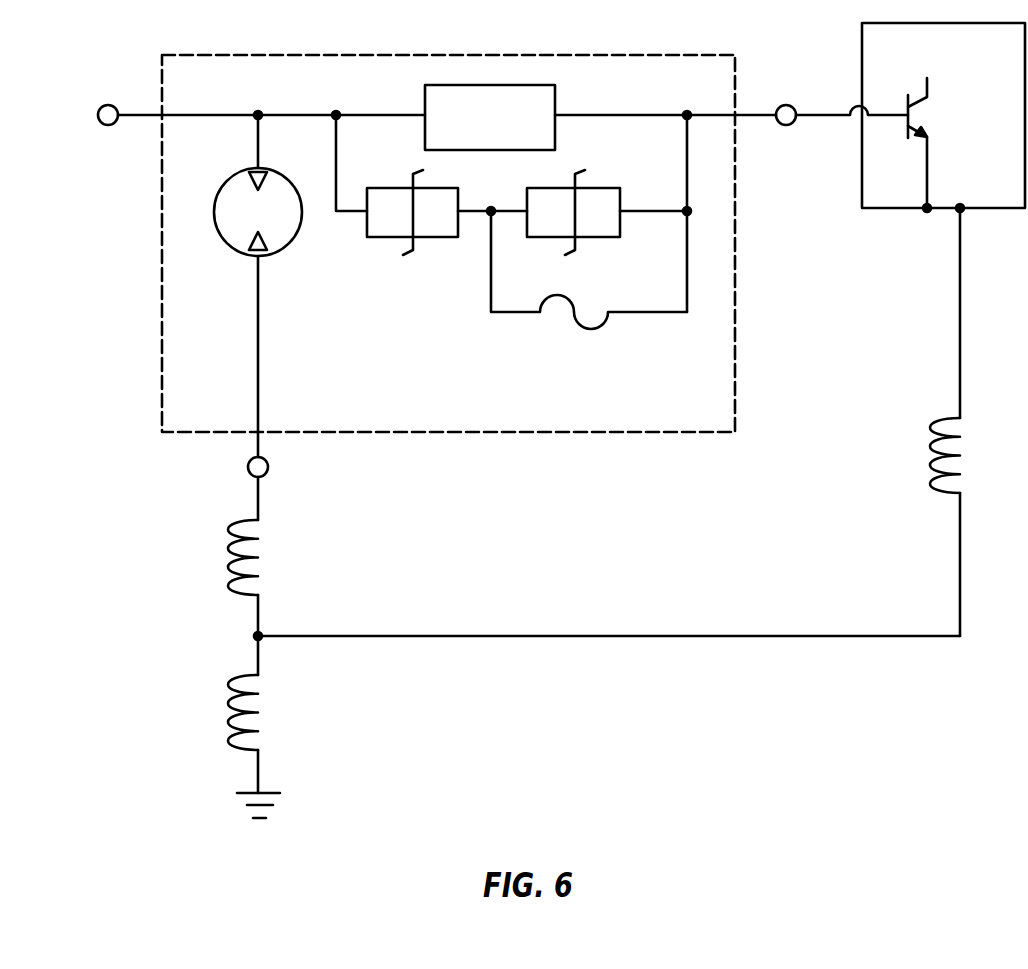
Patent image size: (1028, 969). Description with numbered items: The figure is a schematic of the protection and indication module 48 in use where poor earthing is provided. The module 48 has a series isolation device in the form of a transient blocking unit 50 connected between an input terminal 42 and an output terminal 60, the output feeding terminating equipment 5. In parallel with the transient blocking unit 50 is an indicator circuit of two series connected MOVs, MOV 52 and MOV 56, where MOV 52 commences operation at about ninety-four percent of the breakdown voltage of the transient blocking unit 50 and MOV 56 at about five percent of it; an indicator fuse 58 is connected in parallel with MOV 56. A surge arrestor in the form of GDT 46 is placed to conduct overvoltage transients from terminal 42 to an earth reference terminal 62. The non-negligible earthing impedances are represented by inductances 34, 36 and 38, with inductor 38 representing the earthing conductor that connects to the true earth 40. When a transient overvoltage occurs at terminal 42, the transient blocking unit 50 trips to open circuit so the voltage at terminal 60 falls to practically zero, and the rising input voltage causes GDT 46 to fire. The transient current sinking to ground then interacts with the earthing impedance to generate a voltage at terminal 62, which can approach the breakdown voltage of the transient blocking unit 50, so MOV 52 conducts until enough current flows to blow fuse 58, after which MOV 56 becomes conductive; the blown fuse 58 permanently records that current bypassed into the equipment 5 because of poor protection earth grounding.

The terminating equipment 5 is at (893, 209).
The inductance 34 is at (930, 447).
The inductance 36 is at (228, 551).
The inductor 38 is at (230, 705).
The true earth 40 is at (245, 808).
The input terminal 42 is at (100, 106).
The GDT 46 is at (238, 167).
The protection apparatus 48 is at (172, 480).
The transient blocking unit 50 is at (490, 85).
The MOV 52 is at (387, 238).
The MOV 56 is at (593, 240).
The fuse 58 is at (583, 326).
The output terminal 60 is at (790, 105).
The terminal 62 is at (266, 474).